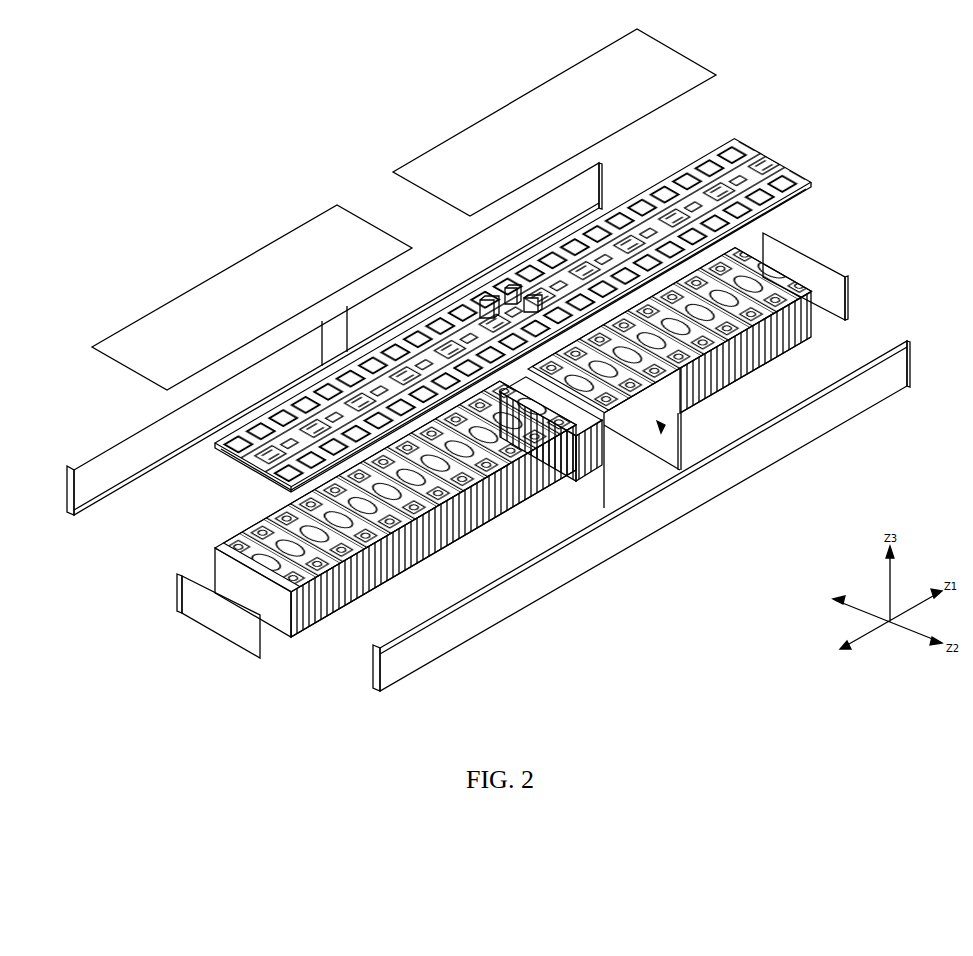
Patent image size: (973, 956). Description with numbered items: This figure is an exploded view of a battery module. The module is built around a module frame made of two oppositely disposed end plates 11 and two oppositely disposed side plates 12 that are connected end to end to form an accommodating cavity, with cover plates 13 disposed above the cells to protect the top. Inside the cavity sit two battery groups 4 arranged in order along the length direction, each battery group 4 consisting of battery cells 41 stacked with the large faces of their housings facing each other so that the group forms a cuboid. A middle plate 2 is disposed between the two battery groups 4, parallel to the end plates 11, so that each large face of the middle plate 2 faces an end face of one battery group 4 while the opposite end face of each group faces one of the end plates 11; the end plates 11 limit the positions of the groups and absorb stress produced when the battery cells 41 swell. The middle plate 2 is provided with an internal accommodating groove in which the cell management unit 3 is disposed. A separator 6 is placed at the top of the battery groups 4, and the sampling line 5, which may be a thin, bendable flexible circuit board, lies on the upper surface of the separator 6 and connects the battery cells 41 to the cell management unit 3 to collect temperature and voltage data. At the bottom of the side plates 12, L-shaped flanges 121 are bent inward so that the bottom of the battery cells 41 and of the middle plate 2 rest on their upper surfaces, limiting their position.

The middle plate 2 is at (607, 483).
The cell management unit 3 is at (682, 441).
The battery group 4 is at (445, 567).
The sampling line 5 is at (778, 203).
The separator 6 is at (752, 140).
The end plate 11 is at (212, 617).
The side plate 12 is at (108, 460).
The cover plate 13 is at (573, 87).
The battery cell 41 is at (372, 598).
The L-shaped flange 121 is at (147, 487).